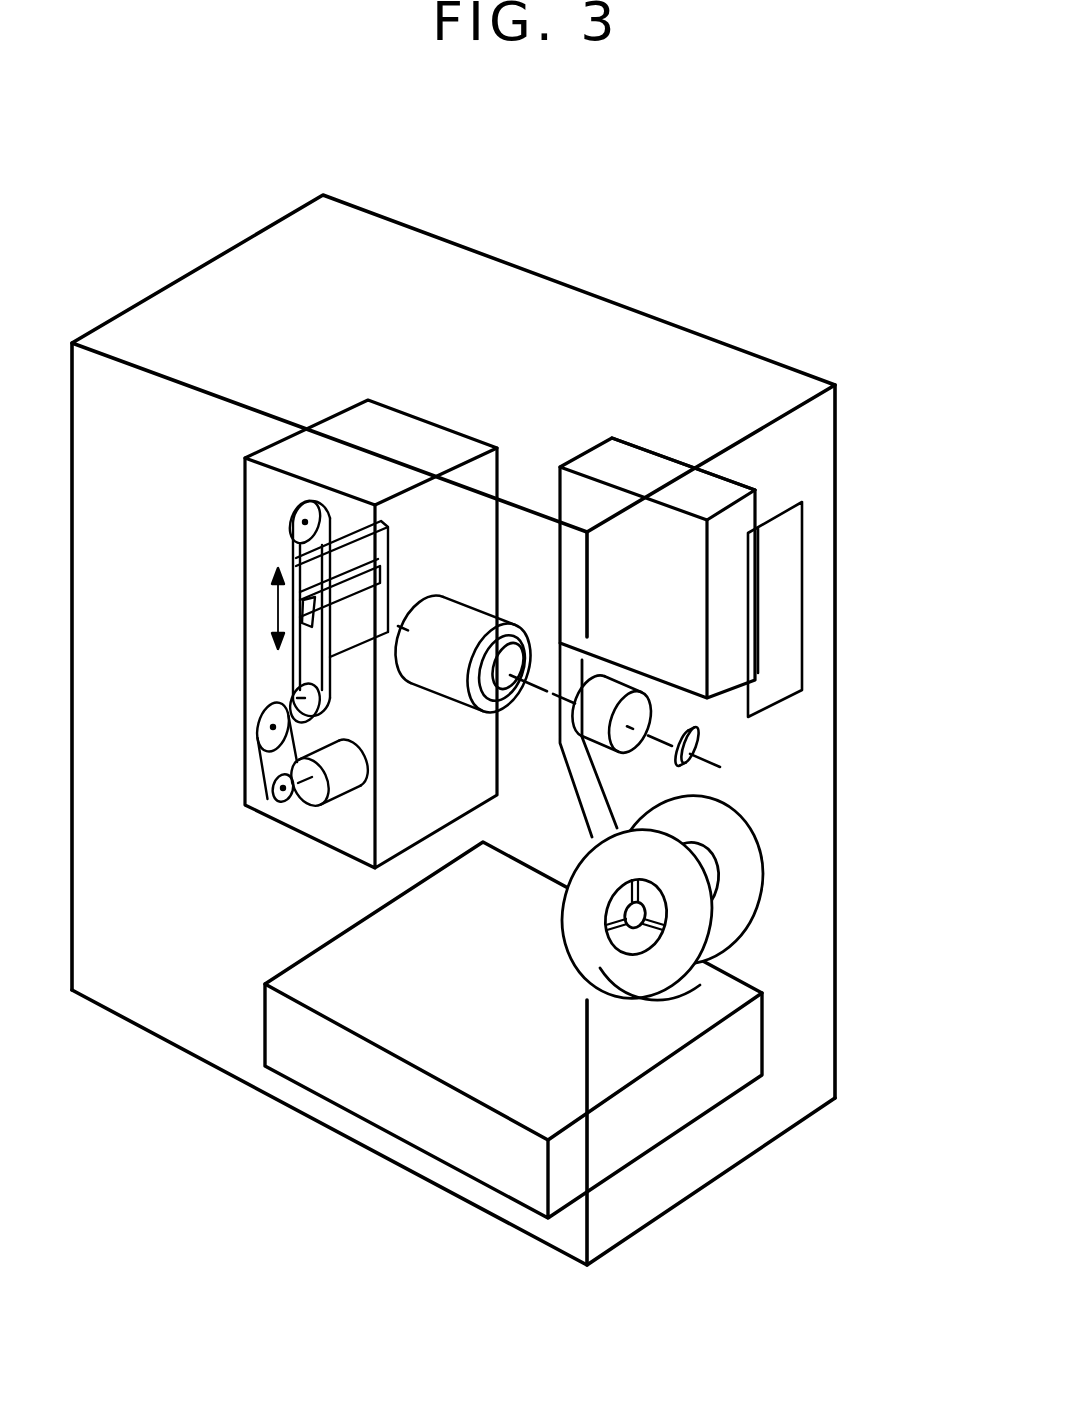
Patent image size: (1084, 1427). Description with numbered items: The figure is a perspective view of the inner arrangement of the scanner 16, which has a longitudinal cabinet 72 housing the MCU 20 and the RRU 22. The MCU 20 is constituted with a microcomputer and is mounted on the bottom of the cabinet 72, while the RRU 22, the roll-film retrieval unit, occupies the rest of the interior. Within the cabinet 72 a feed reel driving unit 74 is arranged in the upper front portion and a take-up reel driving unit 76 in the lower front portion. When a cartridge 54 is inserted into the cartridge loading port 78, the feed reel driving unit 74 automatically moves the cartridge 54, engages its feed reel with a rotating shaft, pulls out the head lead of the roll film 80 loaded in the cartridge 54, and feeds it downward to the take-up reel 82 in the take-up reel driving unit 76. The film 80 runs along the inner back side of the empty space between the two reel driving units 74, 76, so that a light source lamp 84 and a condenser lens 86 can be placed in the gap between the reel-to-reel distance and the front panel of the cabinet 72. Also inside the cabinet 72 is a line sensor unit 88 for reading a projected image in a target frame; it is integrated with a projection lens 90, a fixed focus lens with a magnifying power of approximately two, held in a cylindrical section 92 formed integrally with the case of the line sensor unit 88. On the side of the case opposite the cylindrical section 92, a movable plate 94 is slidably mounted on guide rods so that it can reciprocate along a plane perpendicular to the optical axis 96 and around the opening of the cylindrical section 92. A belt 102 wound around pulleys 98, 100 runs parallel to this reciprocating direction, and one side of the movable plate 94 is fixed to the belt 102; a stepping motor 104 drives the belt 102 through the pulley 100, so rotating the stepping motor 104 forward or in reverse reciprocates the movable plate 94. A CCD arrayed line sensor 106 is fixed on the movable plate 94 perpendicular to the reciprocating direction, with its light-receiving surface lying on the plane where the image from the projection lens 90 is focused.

The scanner 16 is at (453, 730).
The MCU 20 is at (763, 1038).
The RRU 22 is at (718, 957).
The cartridge 54 is at (688, 462).
The cabinet 72 is at (180, 1043).
The feed reel driving unit 74 is at (648, 432).
The take-up reel driving unit 76 is at (633, 957).
The cartridge loading port 78 is at (773, 697).
The roll film 80 is at (566, 838).
The take-up reel 82 is at (655, 997).
The light source lamp 84 is at (695, 754).
The condenser lens 86 is at (652, 712).
The line sensor unit 88 is at (558, 488).
The projection lens 90 is at (678, 473).
The cylindrical section 92 is at (514, 652).
The movable plate 94 is at (388, 586).
The optical axis 96 is at (660, 297).
The pulley 98 is at (292, 508).
The pulley 100 is at (292, 700).
The belt 102 is at (292, 560).
The stepping motor 104 is at (338, 793).
The CCD arrayed line sensor 106 is at (395, 612).